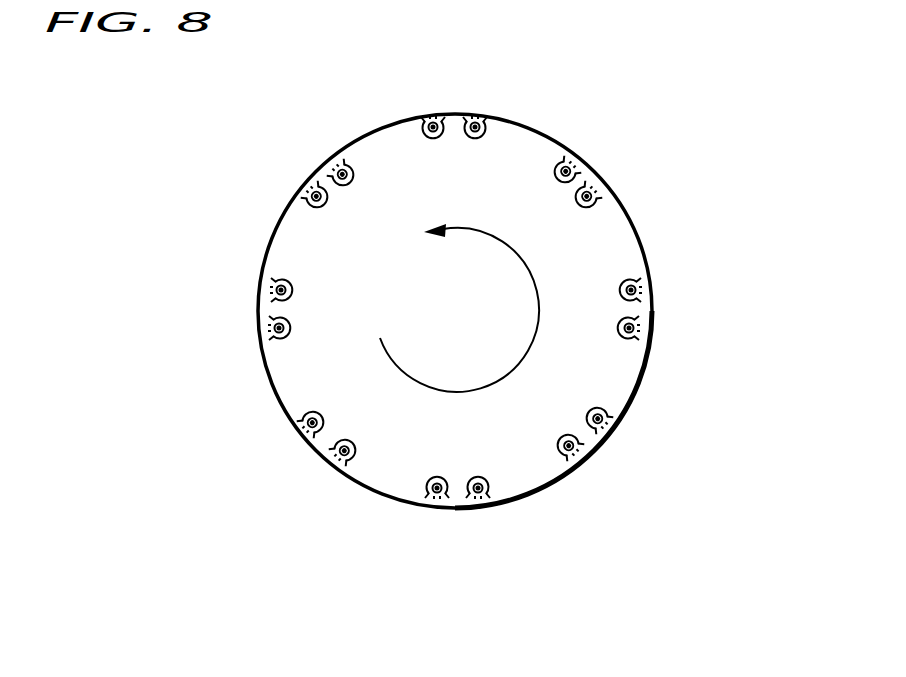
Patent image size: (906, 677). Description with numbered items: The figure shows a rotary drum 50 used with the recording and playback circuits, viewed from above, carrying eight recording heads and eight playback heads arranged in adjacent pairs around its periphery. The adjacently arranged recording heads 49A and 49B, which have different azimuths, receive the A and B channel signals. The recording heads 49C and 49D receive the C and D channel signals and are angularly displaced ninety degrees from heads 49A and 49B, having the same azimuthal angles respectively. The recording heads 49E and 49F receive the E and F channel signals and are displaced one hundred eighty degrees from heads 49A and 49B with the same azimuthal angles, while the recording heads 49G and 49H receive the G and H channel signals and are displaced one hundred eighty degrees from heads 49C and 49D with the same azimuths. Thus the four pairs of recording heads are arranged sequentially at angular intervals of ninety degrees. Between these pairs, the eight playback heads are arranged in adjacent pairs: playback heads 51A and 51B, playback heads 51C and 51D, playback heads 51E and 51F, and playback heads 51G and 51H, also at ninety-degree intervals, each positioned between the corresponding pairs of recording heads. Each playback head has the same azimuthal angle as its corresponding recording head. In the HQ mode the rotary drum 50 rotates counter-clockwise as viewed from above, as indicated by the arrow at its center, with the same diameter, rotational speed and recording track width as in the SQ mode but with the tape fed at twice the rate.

The rotary drum 50 is at (583, 260).
The recording head 49A is at (652, 285).
The recording head 49B is at (652, 326).
The recording head 49C is at (482, 508).
The recording head 49D is at (438, 508).
The recording head 49E is at (262, 334).
The recording head 49F is at (262, 289).
The recording head 49G is at (432, 121).
The recording head 49H is at (477, 121).
The playback head 51A is at (611, 425).
The playback head 51B is at (583, 464).
The playback head 51C is at (335, 466).
The playback head 51D is at (305, 432).
The playback head 51E is at (306, 188).
The playback head 51F is at (333, 164).
The playback head 51G is at (565, 162).
The playback head 51H is at (597, 189).